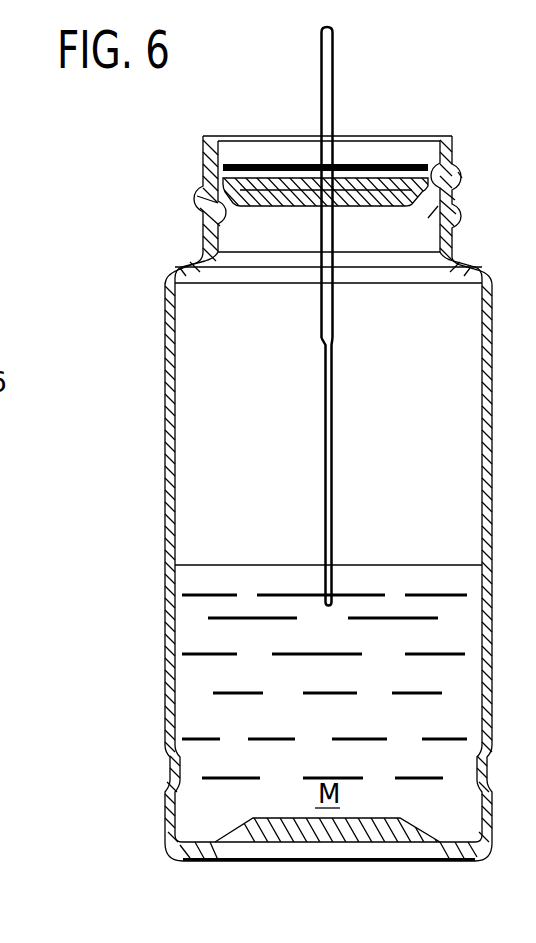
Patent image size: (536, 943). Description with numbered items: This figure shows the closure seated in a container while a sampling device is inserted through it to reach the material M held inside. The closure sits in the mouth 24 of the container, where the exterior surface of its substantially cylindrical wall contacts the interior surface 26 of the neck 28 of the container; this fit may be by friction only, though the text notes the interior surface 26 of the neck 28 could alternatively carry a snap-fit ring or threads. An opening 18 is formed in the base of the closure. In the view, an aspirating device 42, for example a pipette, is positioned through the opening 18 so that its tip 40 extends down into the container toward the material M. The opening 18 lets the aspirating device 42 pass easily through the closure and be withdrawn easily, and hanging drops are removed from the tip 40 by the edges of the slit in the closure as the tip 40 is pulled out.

The neck 28 is at (203, 164).
The interior surface of the neck 26 is at (204, 220).
The mouth 24 is at (454, 208).
The opening 18 is at (311, 219).
The aspirating device 42 is at (321, 339).
The tip 40 is at (333, 604).